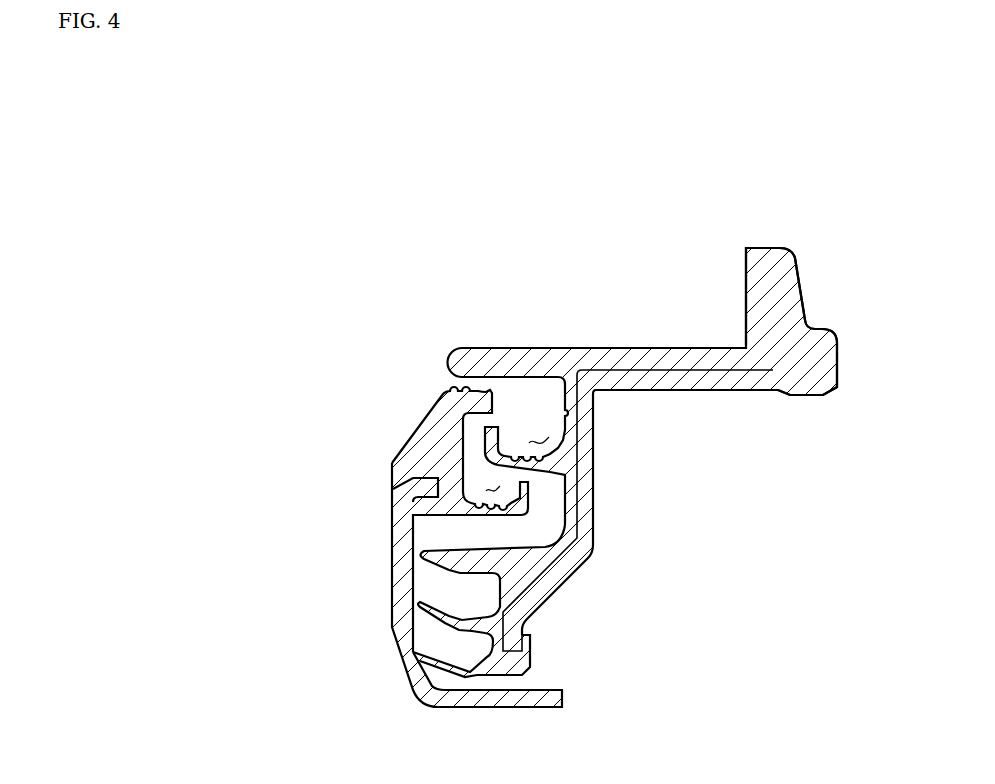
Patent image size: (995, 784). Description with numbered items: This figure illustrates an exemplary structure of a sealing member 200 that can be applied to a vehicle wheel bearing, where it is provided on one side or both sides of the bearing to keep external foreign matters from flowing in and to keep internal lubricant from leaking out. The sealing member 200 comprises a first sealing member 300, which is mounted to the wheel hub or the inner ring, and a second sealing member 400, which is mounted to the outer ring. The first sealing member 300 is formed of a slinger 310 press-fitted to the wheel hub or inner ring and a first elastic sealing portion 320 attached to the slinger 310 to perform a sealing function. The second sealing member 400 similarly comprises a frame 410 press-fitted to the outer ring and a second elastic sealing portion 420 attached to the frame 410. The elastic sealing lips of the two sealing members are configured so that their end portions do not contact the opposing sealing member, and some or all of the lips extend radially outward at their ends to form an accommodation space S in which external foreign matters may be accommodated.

The sealing member 200 is at (371, 104).
The first sealing member 300 is at (421, 572).
The slinger 310 is at (398, 587).
The first elastic sealing portion 320 is at (425, 443).
The second sealing member 400 is at (690, 288).
The frame 410 is at (645, 380).
The second elastic sealing portion 420 is at (806, 388).
The accommodation space S is at (491, 490).